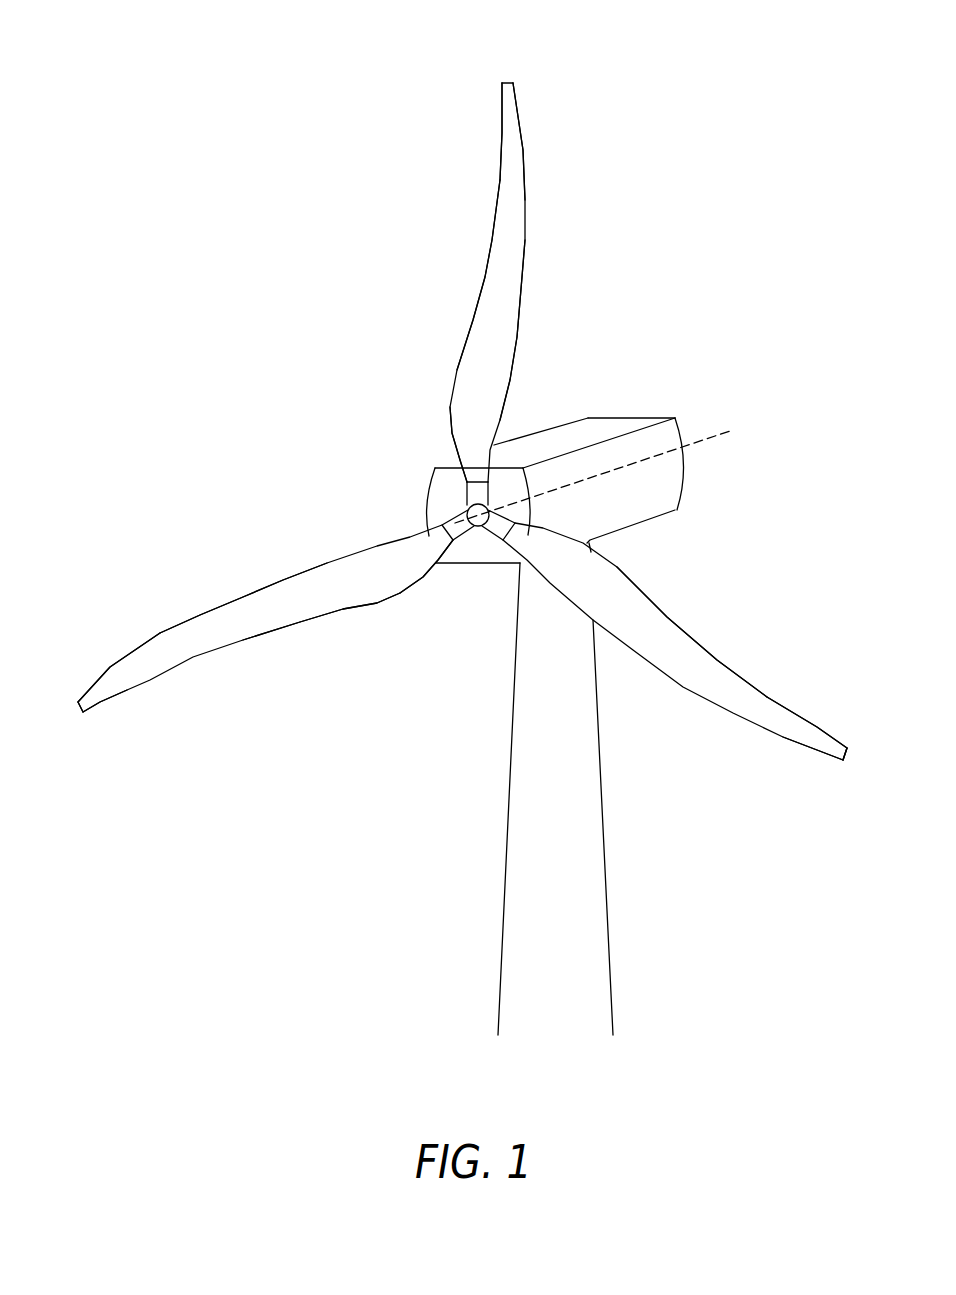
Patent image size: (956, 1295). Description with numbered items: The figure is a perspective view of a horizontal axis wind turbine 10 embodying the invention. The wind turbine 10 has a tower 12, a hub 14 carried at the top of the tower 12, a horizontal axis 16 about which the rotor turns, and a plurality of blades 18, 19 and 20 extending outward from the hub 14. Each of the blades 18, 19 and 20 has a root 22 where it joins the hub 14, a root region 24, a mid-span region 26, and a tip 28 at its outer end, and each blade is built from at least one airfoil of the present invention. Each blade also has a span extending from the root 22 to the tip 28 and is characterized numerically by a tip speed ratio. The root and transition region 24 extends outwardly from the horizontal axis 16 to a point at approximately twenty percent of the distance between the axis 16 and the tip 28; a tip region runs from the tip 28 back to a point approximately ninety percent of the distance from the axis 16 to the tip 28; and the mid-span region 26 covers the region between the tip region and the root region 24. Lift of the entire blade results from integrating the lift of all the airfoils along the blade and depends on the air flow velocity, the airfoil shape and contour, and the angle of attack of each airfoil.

The horizontal axis wind turbine 10 is at (692, 217).
The tower 12 is at (512, 733).
The hub 14 is at (478, 483).
The horizontal axis 16 is at (707, 438).
The blade 18 is at (512, 80).
The blade 19 is at (110, 697).
The blade 20 is at (807, 727).
The root 22 is at (450, 430).
The root region 24 is at (517, 358).
The mid-span region 26 is at (485, 277).
The tip 28 is at (502, 82).